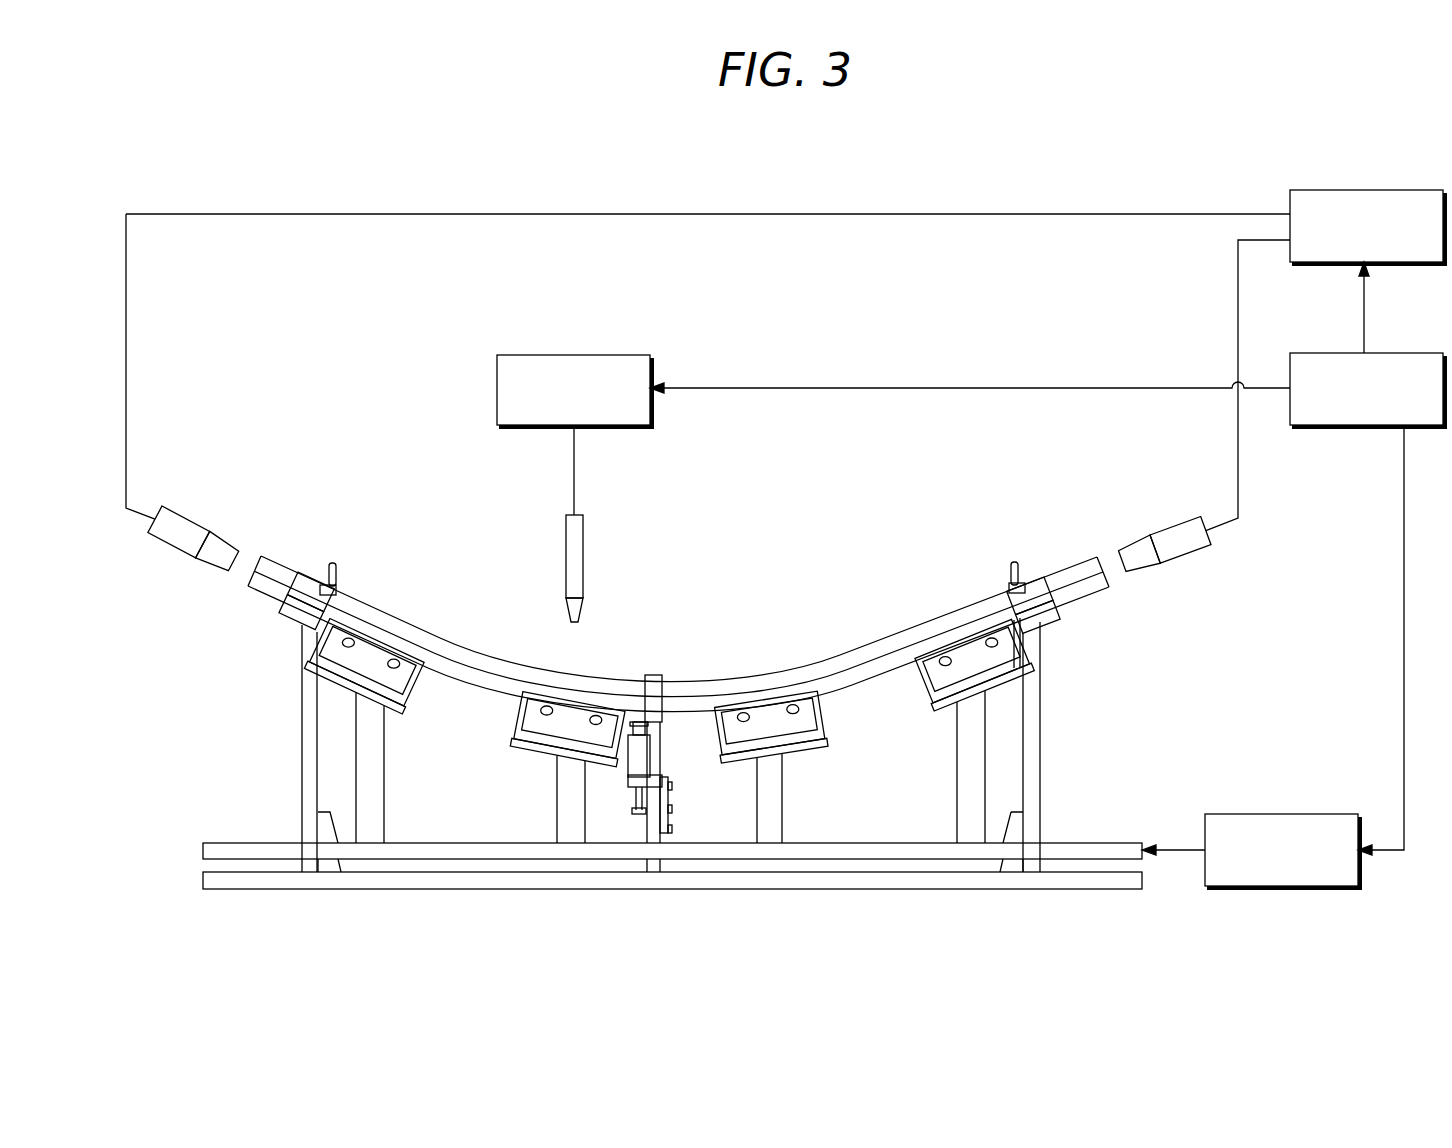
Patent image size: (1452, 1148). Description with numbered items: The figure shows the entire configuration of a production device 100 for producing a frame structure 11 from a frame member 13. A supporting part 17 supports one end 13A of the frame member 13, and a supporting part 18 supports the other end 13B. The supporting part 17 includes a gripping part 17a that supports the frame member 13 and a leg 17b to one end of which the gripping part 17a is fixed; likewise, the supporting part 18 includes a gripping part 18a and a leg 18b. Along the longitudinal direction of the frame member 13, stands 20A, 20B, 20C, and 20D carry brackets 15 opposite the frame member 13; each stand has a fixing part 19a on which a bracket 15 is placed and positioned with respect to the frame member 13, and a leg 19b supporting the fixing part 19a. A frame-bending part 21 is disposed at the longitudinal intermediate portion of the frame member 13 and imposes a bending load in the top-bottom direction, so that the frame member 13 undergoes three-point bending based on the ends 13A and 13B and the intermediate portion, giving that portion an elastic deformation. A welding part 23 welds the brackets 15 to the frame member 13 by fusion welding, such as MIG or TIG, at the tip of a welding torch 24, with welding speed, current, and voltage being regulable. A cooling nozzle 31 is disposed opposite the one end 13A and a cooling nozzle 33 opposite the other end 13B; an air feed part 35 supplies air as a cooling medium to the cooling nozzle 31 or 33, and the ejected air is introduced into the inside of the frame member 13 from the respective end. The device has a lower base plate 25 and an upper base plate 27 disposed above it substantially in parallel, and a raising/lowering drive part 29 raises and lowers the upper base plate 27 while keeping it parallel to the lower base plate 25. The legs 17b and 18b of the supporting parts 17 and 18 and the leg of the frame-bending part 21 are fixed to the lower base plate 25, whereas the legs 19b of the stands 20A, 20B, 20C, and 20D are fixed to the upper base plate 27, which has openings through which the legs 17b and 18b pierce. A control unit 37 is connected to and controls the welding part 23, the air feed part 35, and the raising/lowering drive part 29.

The production device 100 is at (246, 174).
The air feed part 35 is at (1418, 190).
The control unit 37 is at (1423, 353).
The welding part 23 is at (614, 355).
The welding torch 24 is at (583, 533).
The raising/lowering drive part 29 is at (1325, 814).
The cooling nozzle 33 is at (194, 505).
The cooling nozzle 31 is at (1166, 515).
The frame member 13 is at (688, 686).
The one end 13A is at (1074, 556).
The other end 13B is at (272, 555).
The frame structure 11 is at (472, 636).
The bracket 15 is at (382, 640).
The supporting part 17 is at (1025, 572).
The gripping part 17a is at (1052, 620).
The leg 17b is at (1040, 727).
The supporting part 18 is at (308, 571).
The gripping part 18a is at (290, 630).
The leg 18b is at (300, 745).
The fixing part 19a is at (300, 683).
The leg 19b is at (375, 822).
The stand 20A is at (522, 760).
The stand 20B is at (418, 718).
The stand 20C is at (812, 752).
The stand 20D is at (933, 718).
The frame-bending part 21 is at (661, 742).
The upper base plate 27 is at (1100, 843).
The lower base plate 25 is at (1105, 890).